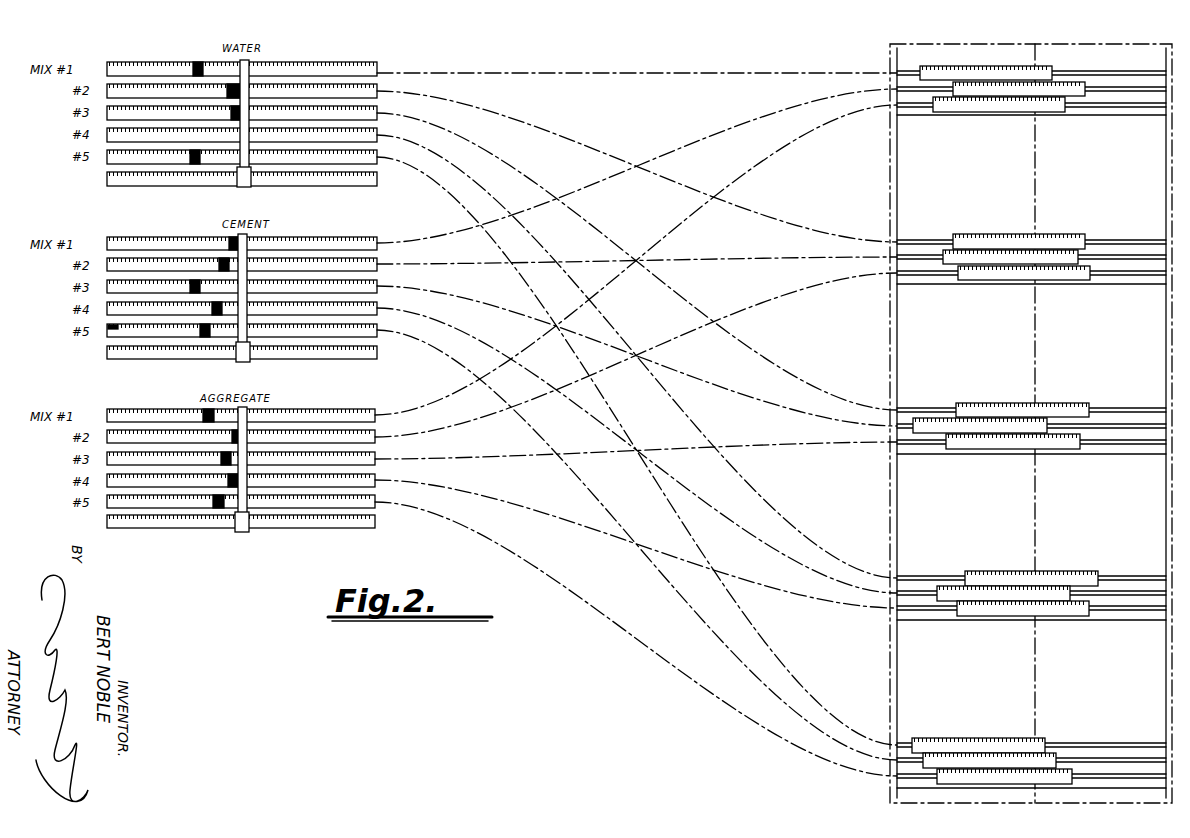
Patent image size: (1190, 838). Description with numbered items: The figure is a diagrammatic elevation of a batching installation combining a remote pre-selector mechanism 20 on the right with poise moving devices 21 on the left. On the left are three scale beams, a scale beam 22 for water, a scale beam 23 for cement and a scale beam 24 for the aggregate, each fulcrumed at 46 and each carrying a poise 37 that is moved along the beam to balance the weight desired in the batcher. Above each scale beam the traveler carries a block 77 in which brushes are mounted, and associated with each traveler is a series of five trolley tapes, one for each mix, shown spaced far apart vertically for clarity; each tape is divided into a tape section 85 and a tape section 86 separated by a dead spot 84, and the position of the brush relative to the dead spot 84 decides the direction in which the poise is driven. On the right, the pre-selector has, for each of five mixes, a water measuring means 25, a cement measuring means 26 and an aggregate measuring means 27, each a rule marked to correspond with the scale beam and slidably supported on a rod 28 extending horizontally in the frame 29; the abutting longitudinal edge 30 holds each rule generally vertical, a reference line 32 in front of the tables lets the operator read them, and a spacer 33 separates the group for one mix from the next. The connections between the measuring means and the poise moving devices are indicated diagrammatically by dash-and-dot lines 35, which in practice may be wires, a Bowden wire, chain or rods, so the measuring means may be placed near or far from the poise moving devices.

The remote pre-selector mechanism 20 is at (999, 434).
The poise moving device 21 is at (312, 60).
The scale beam for water 22 is at (170, 180).
The scale beam for cement 23 is at (158, 354).
The scale beam for aggregate 24 is at (158, 524).
The water measuring means 25 is at (928, 66).
The cement measuring means 26 is at (972, 94).
The aggregate measuring means 27 is at (1042, 112).
The rod 28 is at (1128, 92).
The frame 29 is at (890, 180).
The abutting longitudinal edge 30 is at (1078, 100).
The reference line 32 is at (1038, 354).
The spacer 33 is at (1000, 122).
The wires 35 is at (702, 70).
The poise 37 is at (244, 188).
The fulcrum 46 is at (355, 196).
The block 77 is at (250, 68).
The dead spot 84 is at (200, 61).
The trolley tape 85 is at (160, 64).
The trolley tape 86 is at (340, 66).